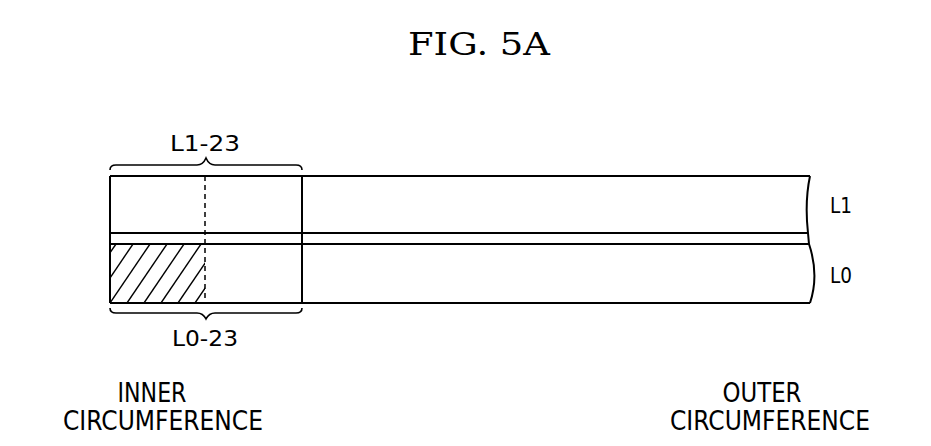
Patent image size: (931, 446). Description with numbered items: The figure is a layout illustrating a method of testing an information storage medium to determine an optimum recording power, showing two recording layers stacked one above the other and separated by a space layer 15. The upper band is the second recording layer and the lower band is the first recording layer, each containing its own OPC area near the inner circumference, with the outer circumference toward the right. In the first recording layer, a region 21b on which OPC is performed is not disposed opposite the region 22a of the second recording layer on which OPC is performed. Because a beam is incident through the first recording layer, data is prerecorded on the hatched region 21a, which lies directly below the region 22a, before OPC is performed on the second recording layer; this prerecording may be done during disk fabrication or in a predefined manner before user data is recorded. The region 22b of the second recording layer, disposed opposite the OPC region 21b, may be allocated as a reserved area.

The space layer 15 is at (798, 239).
The region of the second recording layer on which OPC is performed 22a is at (128, 205).
The region of the second recording layer allocated for a reserved area 22b is at (290, 203).
The region of the first recording layer disposed directly below the OPC region 21a is at (123, 278).
The region of the first recording layer on which OPC is performed 21b is at (283, 280).